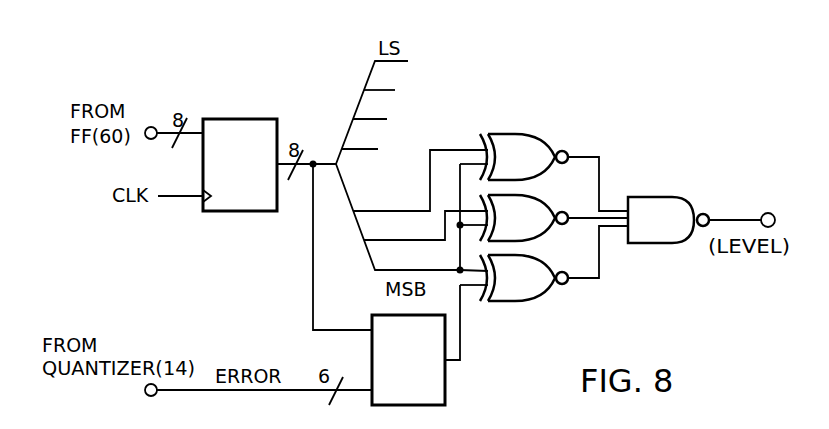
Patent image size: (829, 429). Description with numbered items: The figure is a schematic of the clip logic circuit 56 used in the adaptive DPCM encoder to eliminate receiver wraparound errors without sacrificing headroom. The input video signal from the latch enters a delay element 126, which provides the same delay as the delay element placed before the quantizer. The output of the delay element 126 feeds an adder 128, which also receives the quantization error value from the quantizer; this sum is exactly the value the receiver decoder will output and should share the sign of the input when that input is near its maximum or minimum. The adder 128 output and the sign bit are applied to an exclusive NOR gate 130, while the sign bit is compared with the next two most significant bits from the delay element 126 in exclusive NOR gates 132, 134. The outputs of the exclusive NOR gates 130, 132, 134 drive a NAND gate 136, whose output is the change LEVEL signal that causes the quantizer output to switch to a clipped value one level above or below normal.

The delay element 126 is at (268, 118).
The adder 128 is at (447, 395).
The exclusive NOR gate 130 is at (543, 297).
The exclusive NOR gate 132 is at (530, 196).
The exclusive NOR gate 134 is at (549, 146).
The NAND gate 136 is at (655, 197).
The clip logic circuit 56 is at (680, 143).